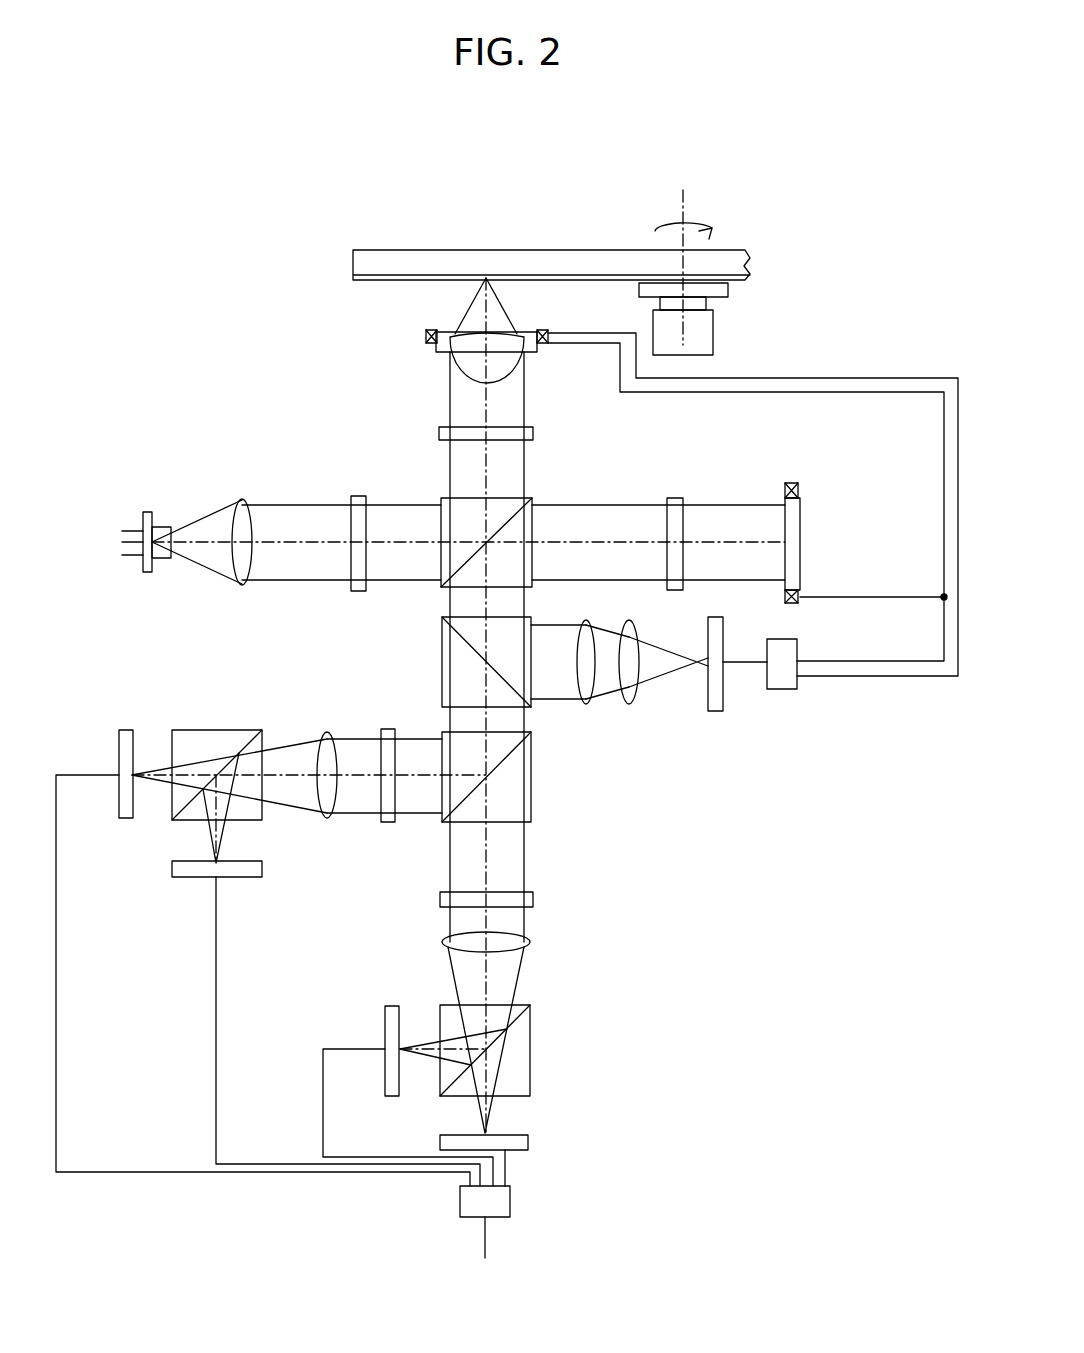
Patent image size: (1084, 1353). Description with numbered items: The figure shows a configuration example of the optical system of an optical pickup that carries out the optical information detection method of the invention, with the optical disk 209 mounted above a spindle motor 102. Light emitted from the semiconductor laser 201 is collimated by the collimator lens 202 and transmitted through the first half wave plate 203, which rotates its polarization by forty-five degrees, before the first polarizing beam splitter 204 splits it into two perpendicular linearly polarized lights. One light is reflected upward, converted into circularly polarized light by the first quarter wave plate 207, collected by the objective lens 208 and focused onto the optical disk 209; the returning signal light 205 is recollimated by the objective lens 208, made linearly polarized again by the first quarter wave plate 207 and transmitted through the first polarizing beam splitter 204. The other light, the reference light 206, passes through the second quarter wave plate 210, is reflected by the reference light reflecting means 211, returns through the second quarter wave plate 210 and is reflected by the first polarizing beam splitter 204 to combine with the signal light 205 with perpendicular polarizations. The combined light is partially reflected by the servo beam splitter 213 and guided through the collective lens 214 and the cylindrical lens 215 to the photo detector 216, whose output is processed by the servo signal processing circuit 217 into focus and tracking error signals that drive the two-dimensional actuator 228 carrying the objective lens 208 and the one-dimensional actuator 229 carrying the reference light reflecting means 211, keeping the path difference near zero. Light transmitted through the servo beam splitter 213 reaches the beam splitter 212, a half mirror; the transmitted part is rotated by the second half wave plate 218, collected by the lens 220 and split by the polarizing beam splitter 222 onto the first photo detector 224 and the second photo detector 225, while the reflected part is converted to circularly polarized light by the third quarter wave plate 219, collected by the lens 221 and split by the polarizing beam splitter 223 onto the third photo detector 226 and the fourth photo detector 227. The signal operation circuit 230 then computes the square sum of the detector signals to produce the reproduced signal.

The spindle motor 102 is at (715, 325).
The semiconductor laser 201 is at (145, 512).
The collimator lens 202 is at (240, 498).
The first half wave plate 203 is at (353, 495).
The first polarizing beam splitter 204 is at (440, 513).
The signal light 205 is at (525, 388).
The reference light 206 is at (589, 505).
The first quarter wave plate 207 is at (453, 425).
The objective lens 208 is at (470, 362).
The optical disk 209 is at (353, 265).
The second quarter wave plate 210 is at (675, 497).
The reference light reflecting means 211 is at (802, 519).
The beam splitter 212 is at (533, 800).
The servo beam splitter 213 is at (441, 655).
The collective lens 214 is at (586, 705).
The cylindrical lens 215 is at (629, 705).
The photo detector 216 is at (715, 713).
The servo signal processing circuit 217 is at (780, 692).
The second half wave plate 218 is at (535, 898).
The third quarter wave plate 219 is at (388, 824).
The lens 220 is at (532, 942).
The lens 221 is at (325, 820).
The polarizing beam splitter 222 is at (532, 1045).
The polarizing beam splitter 223 is at (216, 729).
The first photo detector 224 is at (530, 1143).
The second photo detector 225 is at (383, 1040).
The third photo detector 226 is at (119, 755).
The fourth photo detector 227 is at (186, 880).
The two-dimensional actuator 228 is at (546, 331).
The one-dimensional actuator 229 is at (800, 486).
The signal operation circuit 230 is at (455, 1205).